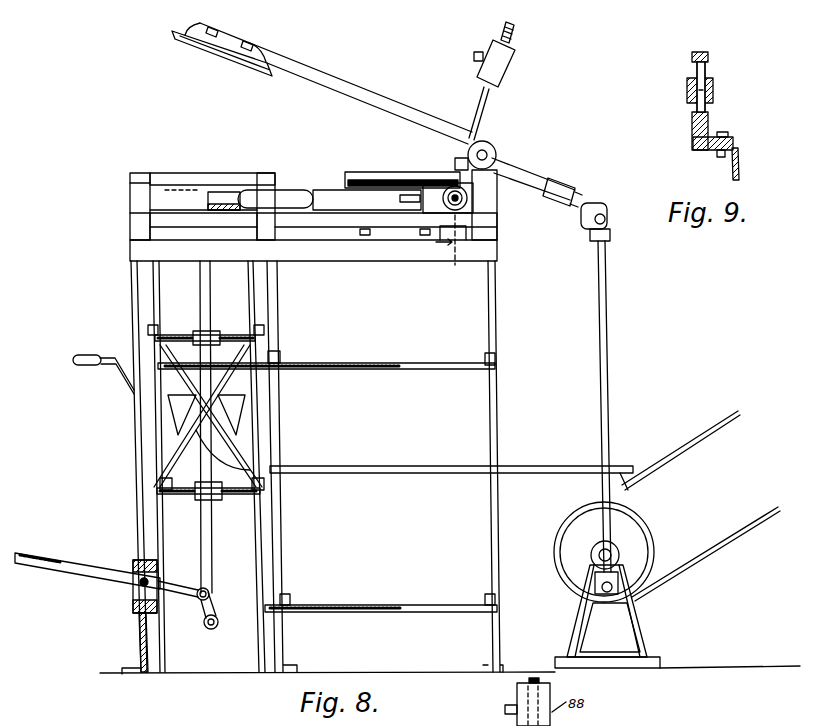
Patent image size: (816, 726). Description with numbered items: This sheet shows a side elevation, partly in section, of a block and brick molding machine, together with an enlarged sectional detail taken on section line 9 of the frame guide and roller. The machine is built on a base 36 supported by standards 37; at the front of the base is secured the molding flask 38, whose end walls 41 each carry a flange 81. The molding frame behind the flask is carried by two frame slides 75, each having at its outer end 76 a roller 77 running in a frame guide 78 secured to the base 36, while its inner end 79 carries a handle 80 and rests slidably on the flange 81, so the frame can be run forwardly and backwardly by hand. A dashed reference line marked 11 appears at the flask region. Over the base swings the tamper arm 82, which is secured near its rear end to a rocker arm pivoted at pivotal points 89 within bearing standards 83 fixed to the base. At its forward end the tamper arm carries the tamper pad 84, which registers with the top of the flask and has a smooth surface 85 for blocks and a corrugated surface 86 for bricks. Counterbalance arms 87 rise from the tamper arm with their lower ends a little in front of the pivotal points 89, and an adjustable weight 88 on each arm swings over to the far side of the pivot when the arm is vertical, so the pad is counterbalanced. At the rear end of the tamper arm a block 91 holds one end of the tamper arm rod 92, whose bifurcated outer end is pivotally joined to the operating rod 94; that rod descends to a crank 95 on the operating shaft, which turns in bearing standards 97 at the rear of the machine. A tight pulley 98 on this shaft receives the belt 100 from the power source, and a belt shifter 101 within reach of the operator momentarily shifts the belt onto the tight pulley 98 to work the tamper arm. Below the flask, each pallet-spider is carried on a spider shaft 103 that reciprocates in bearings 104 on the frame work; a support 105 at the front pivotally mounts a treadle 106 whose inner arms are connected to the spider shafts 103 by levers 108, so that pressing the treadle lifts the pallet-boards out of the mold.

In FIG. 8, the section line 9 is at (452, 268).
In FIG. 8, the bed plate 11 is at (180, 191).
In FIG. 8, the base 36 is at (152, 248).
In FIG. 9, the base 36 is at (740, 164).
In FIG. 8, the standards 37 is at (264, 330).
In FIG. 8, the molding flask 38 is at (130, 186).
In FIG. 8, the end walls 41 is at (218, 176).
In FIG. 8, the frame slides 75 is at (336, 190).
In FIG. 8, the outer end 76 is at (447, 192).
In FIG. 9, the outer end 76 is at (714, 86).
In FIG. 8, the roller 77 is at (470, 208).
In FIG. 9, the roller 77 is at (690, 80).
In FIG. 8, the frame guide 78 is at (376, 180).
In FIG. 9, the frame guide 78 is at (710, 128).
In FIG. 8, the inner end 79 is at (218, 198).
In FIG. 8, the handle 80 is at (290, 200).
In FIG. 8, the flange 81 is at (148, 218).
In FIG. 8, the tamper arm 82 is at (402, 86).
In FIG. 8, the bearing standards 83 is at (500, 162).
In FIG. 8, the tamper pad 84 is at (230, 62).
In FIG. 8, the smooth surface 85 is at (174, 36).
In FIG. 8, the corrugated surface 86 is at (186, 33).
In FIG. 8, the counterbalance arms 87 is at (482, 116).
In FIG. 8, the adjustable weight 88 is at (500, 72).
In FIG. 8, the pivotal points 89 is at (494, 152).
In FIG. 8, the block 91 is at (560, 216).
In FIG. 8, the tamper arm rod 92 is at (545, 200).
In FIG. 8, the operating rod 94 is at (604, 362).
In FIG. 8, the crank 95 is at (618, 566).
In FIG. 8, the bearing standards 97 is at (612, 616).
In FIG. 8, the tight pulley 98 is at (628, 522).
In FIG. 8, the belt 100 is at (690, 450).
In FIG. 8, the belt shifter 101 is at (420, 462).
In FIG. 8, the spider shaft 103 is at (212, 546).
In FIG. 8, the bearings 104 is at (200, 336).
In FIG. 8, the support 105 is at (136, 470).
In FIG. 8, the treadle 106 is at (92, 552).
In FIG. 8, the lever 108 is at (200, 608).